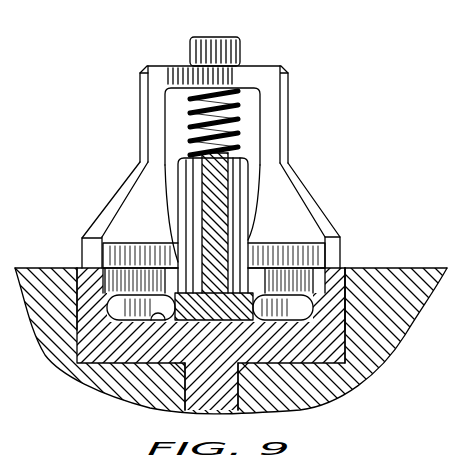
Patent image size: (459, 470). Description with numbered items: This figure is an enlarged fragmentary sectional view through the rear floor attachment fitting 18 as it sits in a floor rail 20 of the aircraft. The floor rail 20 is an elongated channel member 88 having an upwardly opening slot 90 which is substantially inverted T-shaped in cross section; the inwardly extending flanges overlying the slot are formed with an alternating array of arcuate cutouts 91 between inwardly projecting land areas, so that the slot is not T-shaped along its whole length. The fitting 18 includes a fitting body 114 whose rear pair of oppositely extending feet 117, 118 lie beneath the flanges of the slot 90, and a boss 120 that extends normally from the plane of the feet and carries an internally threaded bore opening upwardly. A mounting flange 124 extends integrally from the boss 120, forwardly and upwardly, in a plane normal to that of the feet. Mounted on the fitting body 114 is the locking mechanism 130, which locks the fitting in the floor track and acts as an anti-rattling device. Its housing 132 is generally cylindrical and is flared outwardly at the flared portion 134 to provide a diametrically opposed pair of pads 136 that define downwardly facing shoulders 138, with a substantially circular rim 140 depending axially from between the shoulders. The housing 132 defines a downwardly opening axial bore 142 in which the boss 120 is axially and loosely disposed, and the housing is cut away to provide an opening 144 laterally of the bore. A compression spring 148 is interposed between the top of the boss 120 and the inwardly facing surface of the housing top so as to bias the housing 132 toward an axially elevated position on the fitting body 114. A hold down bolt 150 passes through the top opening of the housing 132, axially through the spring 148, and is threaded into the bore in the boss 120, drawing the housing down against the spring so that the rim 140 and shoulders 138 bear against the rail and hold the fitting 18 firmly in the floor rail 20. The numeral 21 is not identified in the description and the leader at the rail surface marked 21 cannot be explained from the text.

The rear floor attachment fitting 18 is at (330, 200).
The floor rail 20 is at (128, 365).
The top surface 21 is at (22, 268).
The channel member 88 is at (310, 337).
The slot 90 is at (158, 320).
The arcuate cutouts 91 is at (113, 268).
The fitting body 114 is at (256, 163).
The rear foot 117 is at (105, 307).
The rear foot 118 is at (330, 303).
The boss 120 is at (189, 207).
The mounting flange 124 is at (243, 197).
The locking mechanism 130 is at (255, 80).
The housing 132 is at (139, 117).
The flared portion 134 is at (100, 216).
The pads 136 is at (83, 257).
The shoulders 138 is at (77, 275).
The rim 140 is at (277, 316).
The bore 142 is at (168, 95).
The opening 144 is at (230, 240).
The compression spring 148 is at (187, 132).
The hold down bolt 150 is at (243, 50).